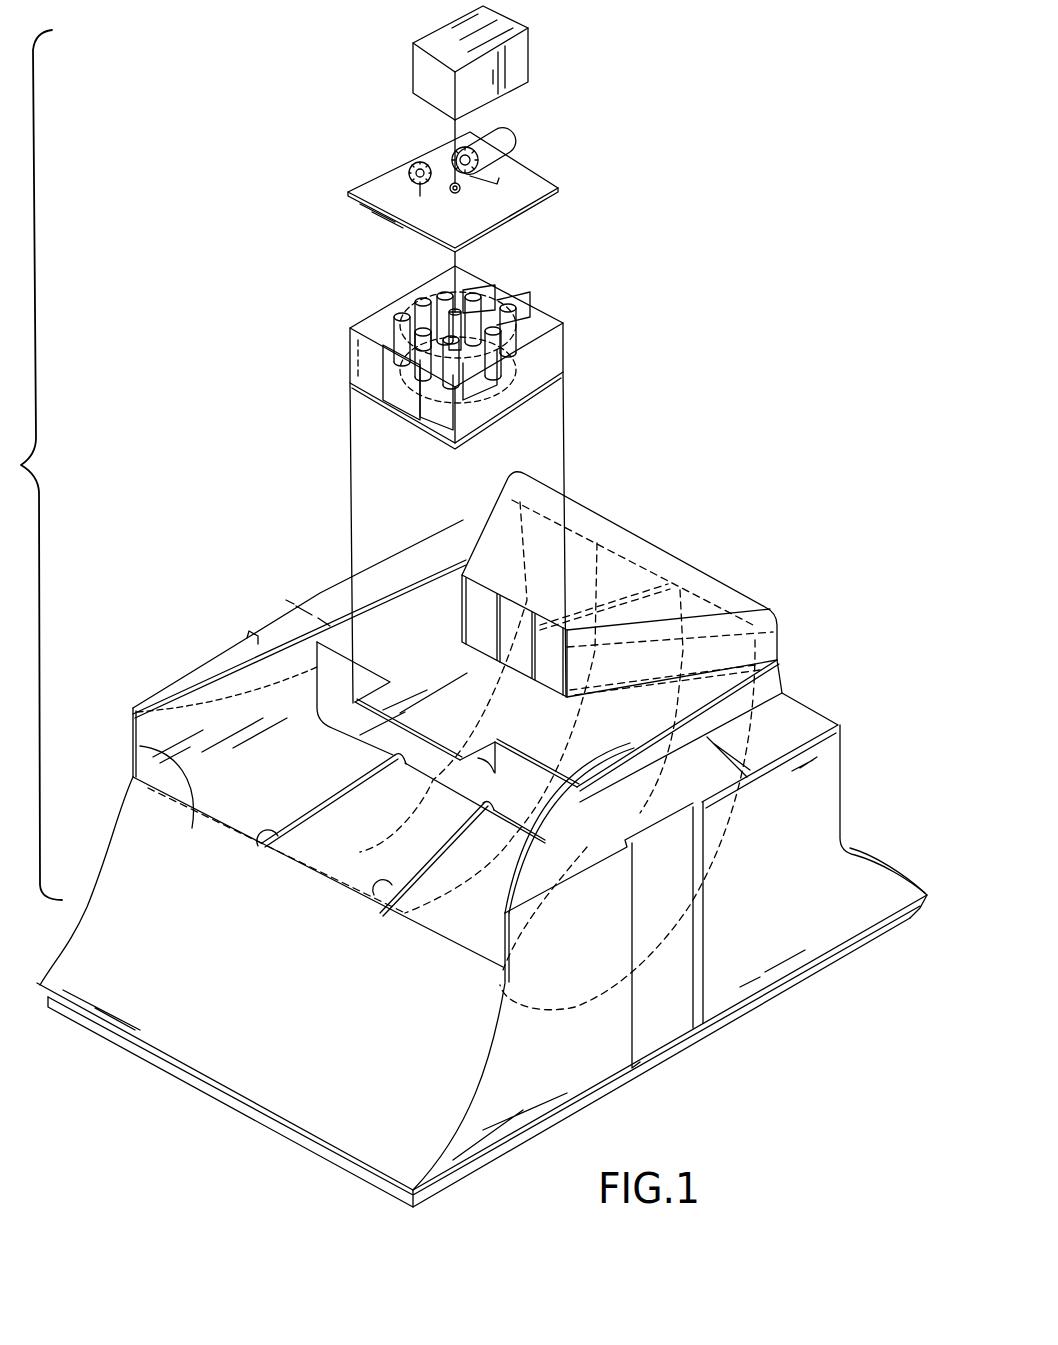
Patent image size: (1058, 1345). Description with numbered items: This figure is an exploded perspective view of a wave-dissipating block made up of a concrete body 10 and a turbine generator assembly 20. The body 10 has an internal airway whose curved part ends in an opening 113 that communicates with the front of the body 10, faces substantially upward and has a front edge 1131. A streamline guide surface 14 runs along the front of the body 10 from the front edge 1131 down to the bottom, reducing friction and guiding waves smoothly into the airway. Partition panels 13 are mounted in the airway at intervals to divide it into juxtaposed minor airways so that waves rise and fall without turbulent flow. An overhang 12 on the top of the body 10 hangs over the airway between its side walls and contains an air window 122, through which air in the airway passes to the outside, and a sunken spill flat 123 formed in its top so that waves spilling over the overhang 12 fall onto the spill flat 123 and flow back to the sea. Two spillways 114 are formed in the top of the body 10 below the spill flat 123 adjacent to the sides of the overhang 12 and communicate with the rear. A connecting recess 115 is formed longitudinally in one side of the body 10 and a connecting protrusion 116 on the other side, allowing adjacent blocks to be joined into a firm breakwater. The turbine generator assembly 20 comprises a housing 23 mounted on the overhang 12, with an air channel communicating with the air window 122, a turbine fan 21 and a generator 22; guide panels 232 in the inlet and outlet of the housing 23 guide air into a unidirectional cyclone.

The body 10 is at (482, 833).
The overhang 12 is at (581, 584).
The partition panels 13 is at (250, 833).
The guide surface 14 is at (262, 1060).
The turbine generator assembly 20 is at (516, 129).
The turbine fan 21 is at (437, 305).
The generator 22 is at (498, 145).
The housing 23 is at (429, 477).
The opening 113 is at (444, 756).
The spillways 114 is at (422, 555).
The connecting recess 115 is at (660, 1005).
The connecting protrusion 116 is at (277, 620).
The air window 122 is at (479, 631).
The sunken spill flat 123 is at (440, 690).
The guide panels 232 is at (513, 312).
The front edge 1131 is at (170, 750).